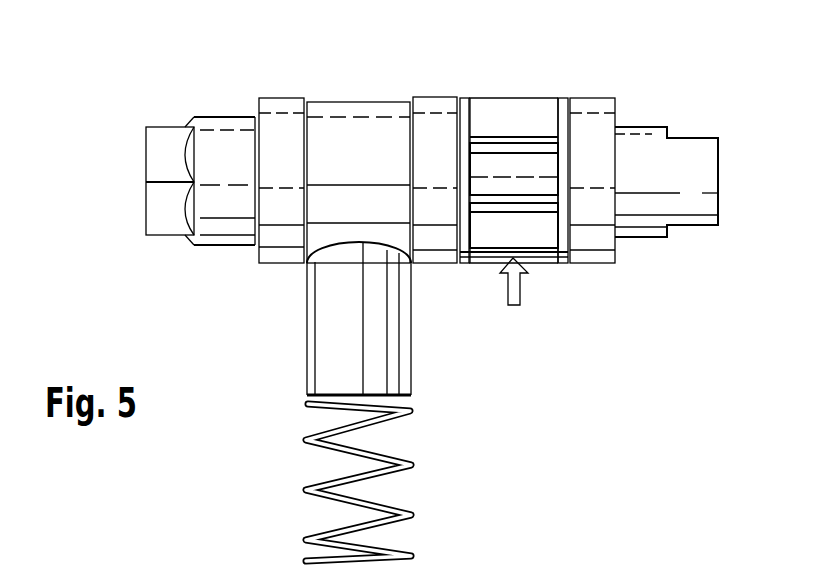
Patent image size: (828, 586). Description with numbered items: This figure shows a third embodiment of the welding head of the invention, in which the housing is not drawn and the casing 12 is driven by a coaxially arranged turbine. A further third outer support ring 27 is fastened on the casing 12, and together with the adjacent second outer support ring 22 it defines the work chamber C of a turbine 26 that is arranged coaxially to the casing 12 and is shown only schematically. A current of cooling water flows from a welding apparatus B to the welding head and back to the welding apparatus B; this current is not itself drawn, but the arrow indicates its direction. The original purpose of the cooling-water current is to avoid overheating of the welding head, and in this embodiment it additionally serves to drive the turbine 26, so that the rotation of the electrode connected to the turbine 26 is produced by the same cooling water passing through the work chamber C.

The casing 12 is at (348, 143).
The second outer support ring 22 is at (435, 128).
The turbine 26 is at (510, 121).
The third outer support ring 27 is at (590, 138).
The welding apparatus B is at (513, 290).
The work chamber C is at (505, 167).